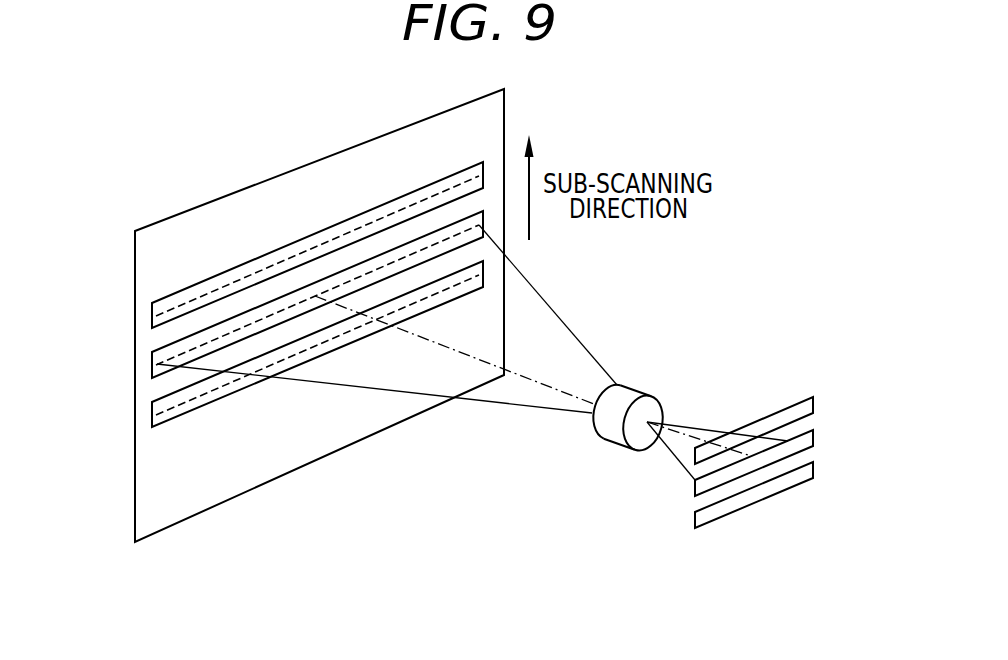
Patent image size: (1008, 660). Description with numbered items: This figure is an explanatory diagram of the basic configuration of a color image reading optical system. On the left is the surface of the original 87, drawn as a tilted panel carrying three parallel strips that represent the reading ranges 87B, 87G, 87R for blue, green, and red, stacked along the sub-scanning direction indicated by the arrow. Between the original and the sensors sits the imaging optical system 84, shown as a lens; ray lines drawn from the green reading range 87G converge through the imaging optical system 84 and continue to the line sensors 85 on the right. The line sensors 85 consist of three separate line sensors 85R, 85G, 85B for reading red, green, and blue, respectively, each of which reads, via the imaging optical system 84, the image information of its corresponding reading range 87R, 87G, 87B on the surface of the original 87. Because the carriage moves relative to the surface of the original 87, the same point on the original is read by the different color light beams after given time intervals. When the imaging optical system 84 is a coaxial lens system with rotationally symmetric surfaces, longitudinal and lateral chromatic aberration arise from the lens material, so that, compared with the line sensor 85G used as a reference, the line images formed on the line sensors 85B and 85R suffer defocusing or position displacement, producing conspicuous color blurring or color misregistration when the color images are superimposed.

The imaging optical system 84 is at (603, 443).
The line sensors 85 is at (751, 460).
The line sensor for reading red 85R is at (815, 402).
The line sensor for reading green 85G is at (815, 437).
The line sensor for reading blue 85B is at (815, 471).
The surface of the original 87 is at (145, 487).
The reading range for blue 87B is at (148, 313).
The reading range for green 87G is at (148, 365).
The reading range for red 87R is at (148, 415).